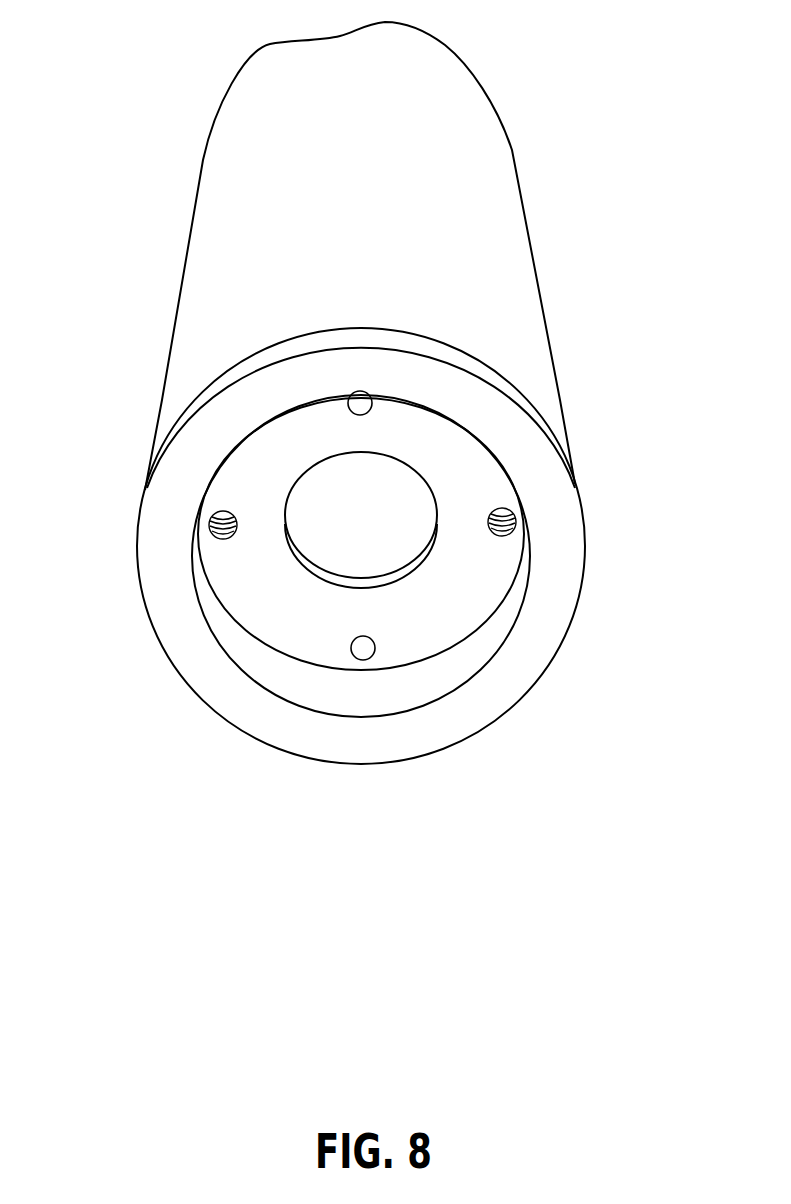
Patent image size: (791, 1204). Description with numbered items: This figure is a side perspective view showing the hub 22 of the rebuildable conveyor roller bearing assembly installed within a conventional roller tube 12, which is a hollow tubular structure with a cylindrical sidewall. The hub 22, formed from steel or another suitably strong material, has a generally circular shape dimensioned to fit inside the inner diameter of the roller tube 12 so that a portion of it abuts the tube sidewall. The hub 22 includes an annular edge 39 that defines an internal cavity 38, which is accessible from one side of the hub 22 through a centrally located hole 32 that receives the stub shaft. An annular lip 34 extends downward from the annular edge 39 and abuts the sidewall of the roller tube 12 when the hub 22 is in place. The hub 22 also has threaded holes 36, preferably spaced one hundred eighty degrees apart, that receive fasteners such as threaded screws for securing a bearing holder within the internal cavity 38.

The roller tube 12 is at (513, 290).
The hub 22 is at (212, 665).
The centrally located hole 32 is at (368, 543).
The annular lip 34 is at (353, 753).
The threaded hole 36 is at (222, 540).
The internal cavity 38 is at (455, 608).
The annular edge 39 is at (185, 490).